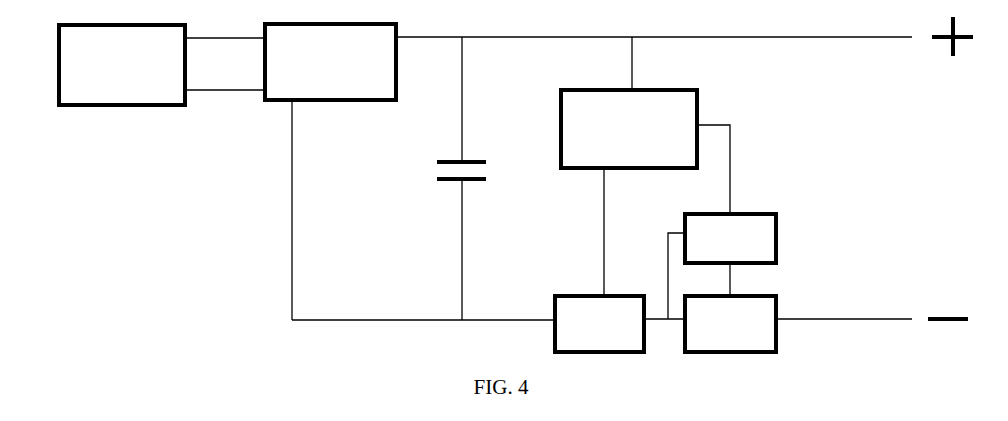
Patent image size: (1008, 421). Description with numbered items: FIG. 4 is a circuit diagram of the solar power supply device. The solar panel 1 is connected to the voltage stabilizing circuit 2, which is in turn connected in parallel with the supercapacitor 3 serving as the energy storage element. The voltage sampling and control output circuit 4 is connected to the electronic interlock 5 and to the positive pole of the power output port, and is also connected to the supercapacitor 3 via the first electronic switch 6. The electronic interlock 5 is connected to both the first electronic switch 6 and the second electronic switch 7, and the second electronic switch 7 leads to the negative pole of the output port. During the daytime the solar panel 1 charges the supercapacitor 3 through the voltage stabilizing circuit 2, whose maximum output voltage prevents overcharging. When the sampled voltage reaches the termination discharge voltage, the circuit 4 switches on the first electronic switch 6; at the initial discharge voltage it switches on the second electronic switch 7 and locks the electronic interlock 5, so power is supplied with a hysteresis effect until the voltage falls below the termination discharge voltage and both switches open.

The solar panel 1 is at (122, 65).
The voltage stabilizing circuit 2 is at (330, 62).
The supercapacitor 3 is at (449, 172).
The voltage sampling and control output circuit 4 is at (629, 129).
The electronic interlock 5 is at (730, 238).
The first electronic switch 6 is at (599, 324).
The second electronic switch 7 is at (730, 324).